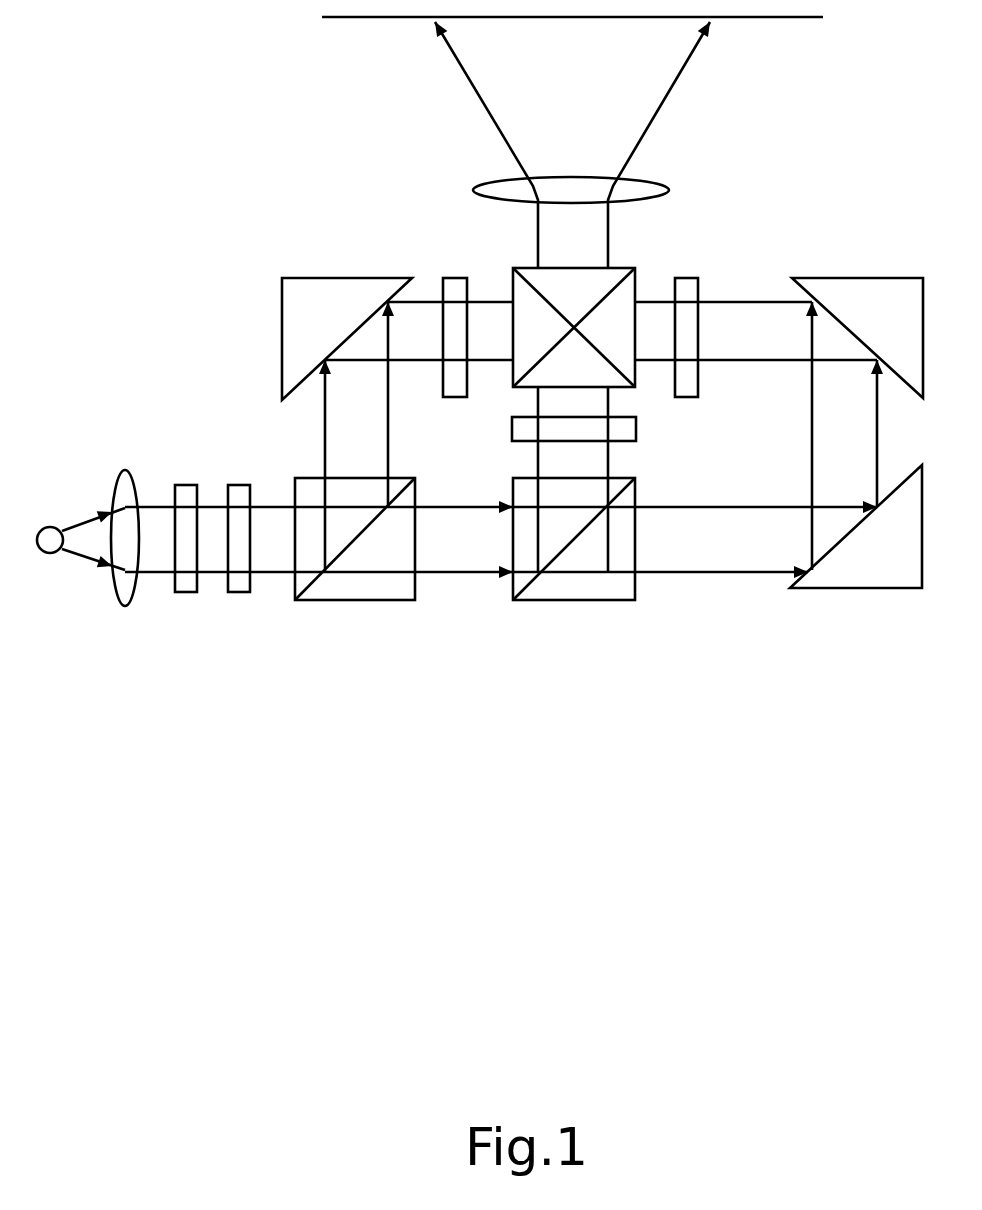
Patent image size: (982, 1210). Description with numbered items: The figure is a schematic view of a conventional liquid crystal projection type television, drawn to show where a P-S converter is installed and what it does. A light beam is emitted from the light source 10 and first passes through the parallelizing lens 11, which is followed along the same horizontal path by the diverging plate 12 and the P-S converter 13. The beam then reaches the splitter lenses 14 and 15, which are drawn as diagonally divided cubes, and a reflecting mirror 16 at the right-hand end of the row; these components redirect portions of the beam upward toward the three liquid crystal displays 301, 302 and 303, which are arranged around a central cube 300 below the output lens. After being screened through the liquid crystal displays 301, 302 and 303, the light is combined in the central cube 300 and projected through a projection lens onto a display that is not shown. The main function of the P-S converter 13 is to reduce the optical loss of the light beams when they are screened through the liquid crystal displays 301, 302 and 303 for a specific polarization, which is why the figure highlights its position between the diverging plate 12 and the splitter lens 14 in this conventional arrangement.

The light source 10 is at (50, 553).
The parallelizing lens 11 is at (125, 606).
The diverging plate 12 is at (186, 592).
The P-S converter 13 is at (239, 592).
The splitter lens 14 is at (360, 600).
The splitter lens 15 is at (582, 600).
The reflecting mirror 16 is at (874, 588).
The polarizing beam splitter cube 300 is at (632, 267).
The liquid crystal display 301 is at (458, 277).
The liquid crystal display 302 is at (615, 559).
The liquid crystal display 303 is at (693, 277).